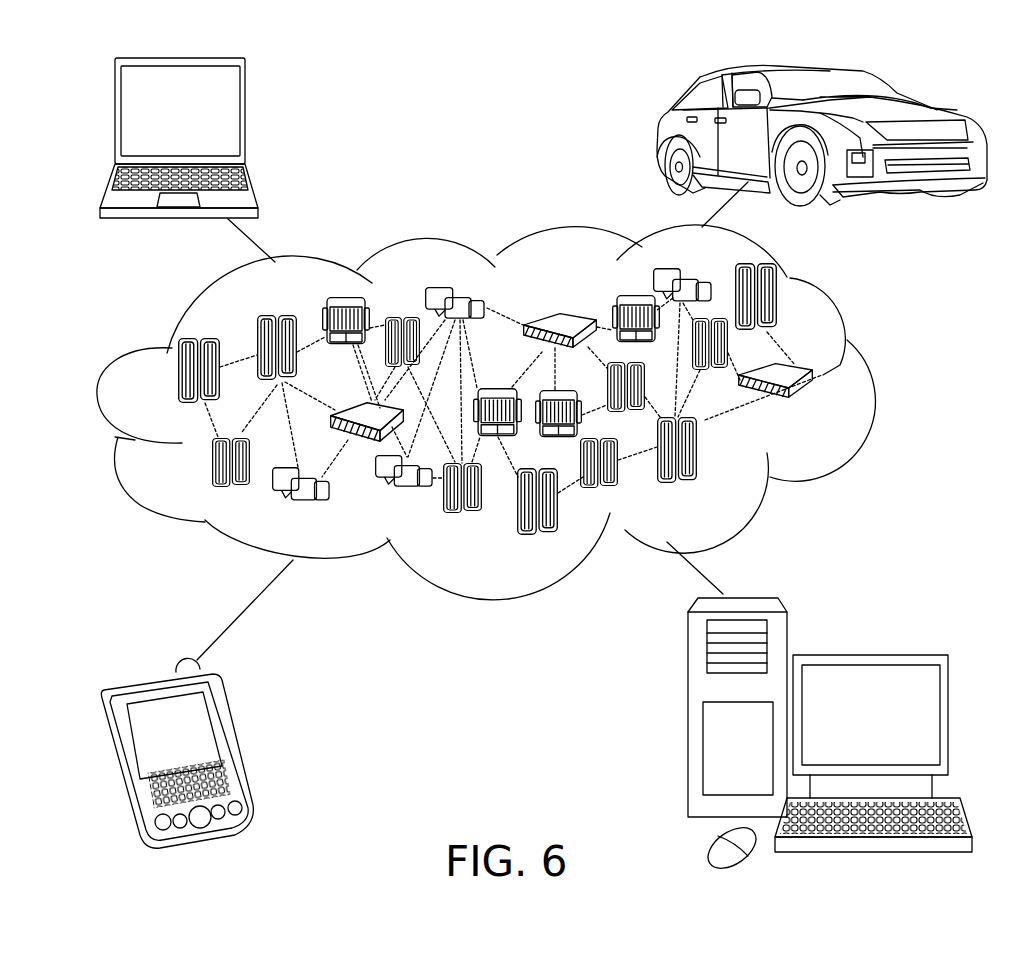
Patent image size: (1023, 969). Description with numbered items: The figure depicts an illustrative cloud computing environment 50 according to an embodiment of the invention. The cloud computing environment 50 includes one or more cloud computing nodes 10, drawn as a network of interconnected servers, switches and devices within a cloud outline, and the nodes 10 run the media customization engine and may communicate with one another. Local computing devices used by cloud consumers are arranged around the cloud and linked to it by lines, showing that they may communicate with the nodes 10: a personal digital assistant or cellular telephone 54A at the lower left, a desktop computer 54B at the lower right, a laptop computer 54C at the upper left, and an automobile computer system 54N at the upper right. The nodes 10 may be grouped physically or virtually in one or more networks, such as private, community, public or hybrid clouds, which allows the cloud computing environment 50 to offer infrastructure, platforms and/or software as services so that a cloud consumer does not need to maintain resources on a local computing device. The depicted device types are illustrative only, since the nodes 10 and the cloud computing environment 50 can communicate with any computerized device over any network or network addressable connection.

The laptop computer 54C is at (247, 121).
The automobile computer system 54N is at (663, 134).
The personal digital assistant or cellular telephone 54A is at (238, 742).
The desktop computer 54B is at (868, 655).
The cloud computing environment 50 is at (508, 442).
The cloud computing node 10 is at (813, 408).